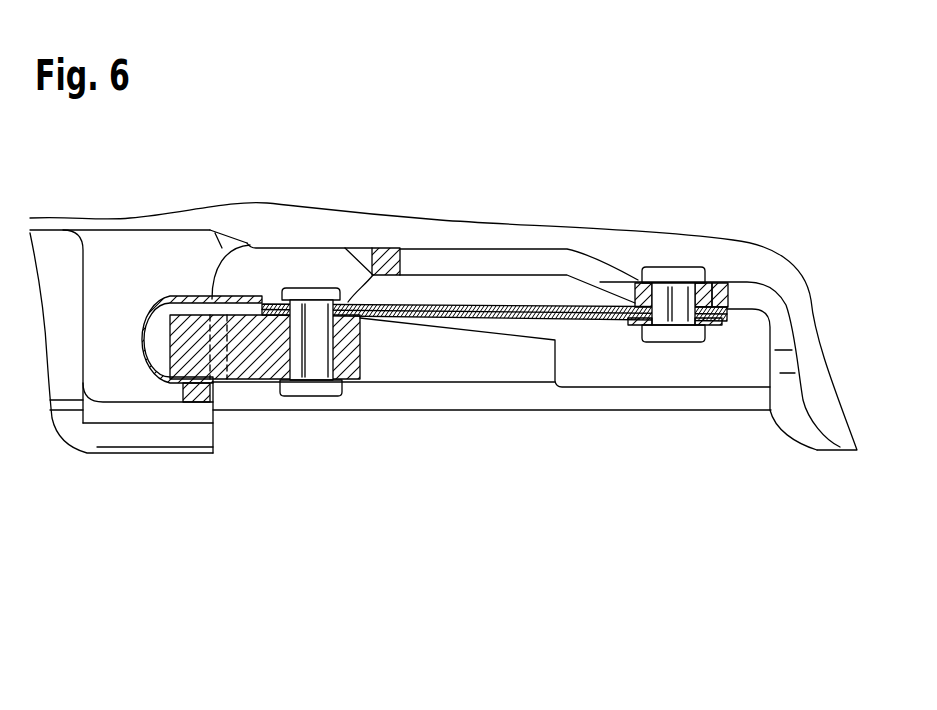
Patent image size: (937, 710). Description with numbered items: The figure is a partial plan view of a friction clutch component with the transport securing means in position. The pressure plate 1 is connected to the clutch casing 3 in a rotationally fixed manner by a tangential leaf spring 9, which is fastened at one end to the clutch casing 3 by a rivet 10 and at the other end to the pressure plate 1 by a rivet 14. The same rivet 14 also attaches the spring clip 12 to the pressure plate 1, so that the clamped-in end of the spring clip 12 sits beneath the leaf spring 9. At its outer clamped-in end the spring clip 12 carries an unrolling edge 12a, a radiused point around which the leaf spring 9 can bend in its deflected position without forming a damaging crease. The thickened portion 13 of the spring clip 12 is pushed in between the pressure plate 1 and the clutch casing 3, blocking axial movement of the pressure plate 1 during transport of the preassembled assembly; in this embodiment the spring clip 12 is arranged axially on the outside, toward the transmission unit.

The pressure plate 1 is at (495, 397).
The clutch casing 3 is at (775, 315).
The tangential leaf spring 9 is at (513, 305).
The rivet 10 is at (663, 300).
The spring clip 12 is at (165, 296).
The unrolling edge 12a is at (353, 297).
The thickened portion 13 is at (213, 392).
The rivet 14 is at (303, 335).